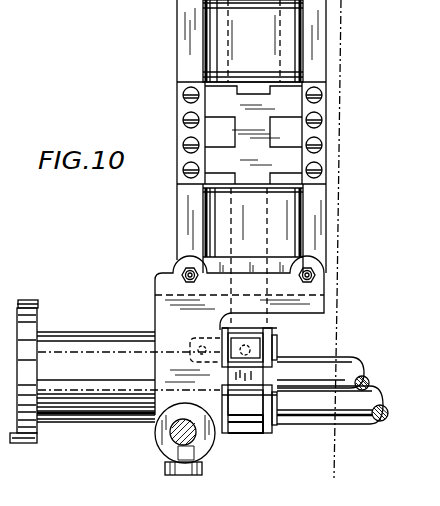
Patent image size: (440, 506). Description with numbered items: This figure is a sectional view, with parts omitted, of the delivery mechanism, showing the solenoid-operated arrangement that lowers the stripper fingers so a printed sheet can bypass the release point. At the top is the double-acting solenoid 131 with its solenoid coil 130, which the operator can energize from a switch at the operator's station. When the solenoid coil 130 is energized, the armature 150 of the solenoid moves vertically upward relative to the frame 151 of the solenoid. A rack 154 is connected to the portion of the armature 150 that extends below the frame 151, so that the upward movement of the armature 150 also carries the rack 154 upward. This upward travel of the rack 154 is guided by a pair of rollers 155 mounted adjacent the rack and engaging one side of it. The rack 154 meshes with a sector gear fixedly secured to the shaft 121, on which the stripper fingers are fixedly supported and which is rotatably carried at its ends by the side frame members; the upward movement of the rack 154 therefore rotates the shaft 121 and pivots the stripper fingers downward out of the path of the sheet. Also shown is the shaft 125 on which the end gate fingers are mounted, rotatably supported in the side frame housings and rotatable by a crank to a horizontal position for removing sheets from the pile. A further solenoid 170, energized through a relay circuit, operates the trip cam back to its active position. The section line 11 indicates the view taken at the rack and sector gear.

The solenoid coil 130 is at (288, 43).
The double-acting solenoid 131 is at (333, 129).
The armature 150 is at (283, 162).
The frame 151 is at (320, 205).
The solenoid 170 is at (285, 235).
The rollers 155 is at (255, 332).
The shaft 121 is at (343, 365).
The shaft 125 is at (350, 422).
The rack 154 is at (228, 427).
The section line 11 is at (338, 475).